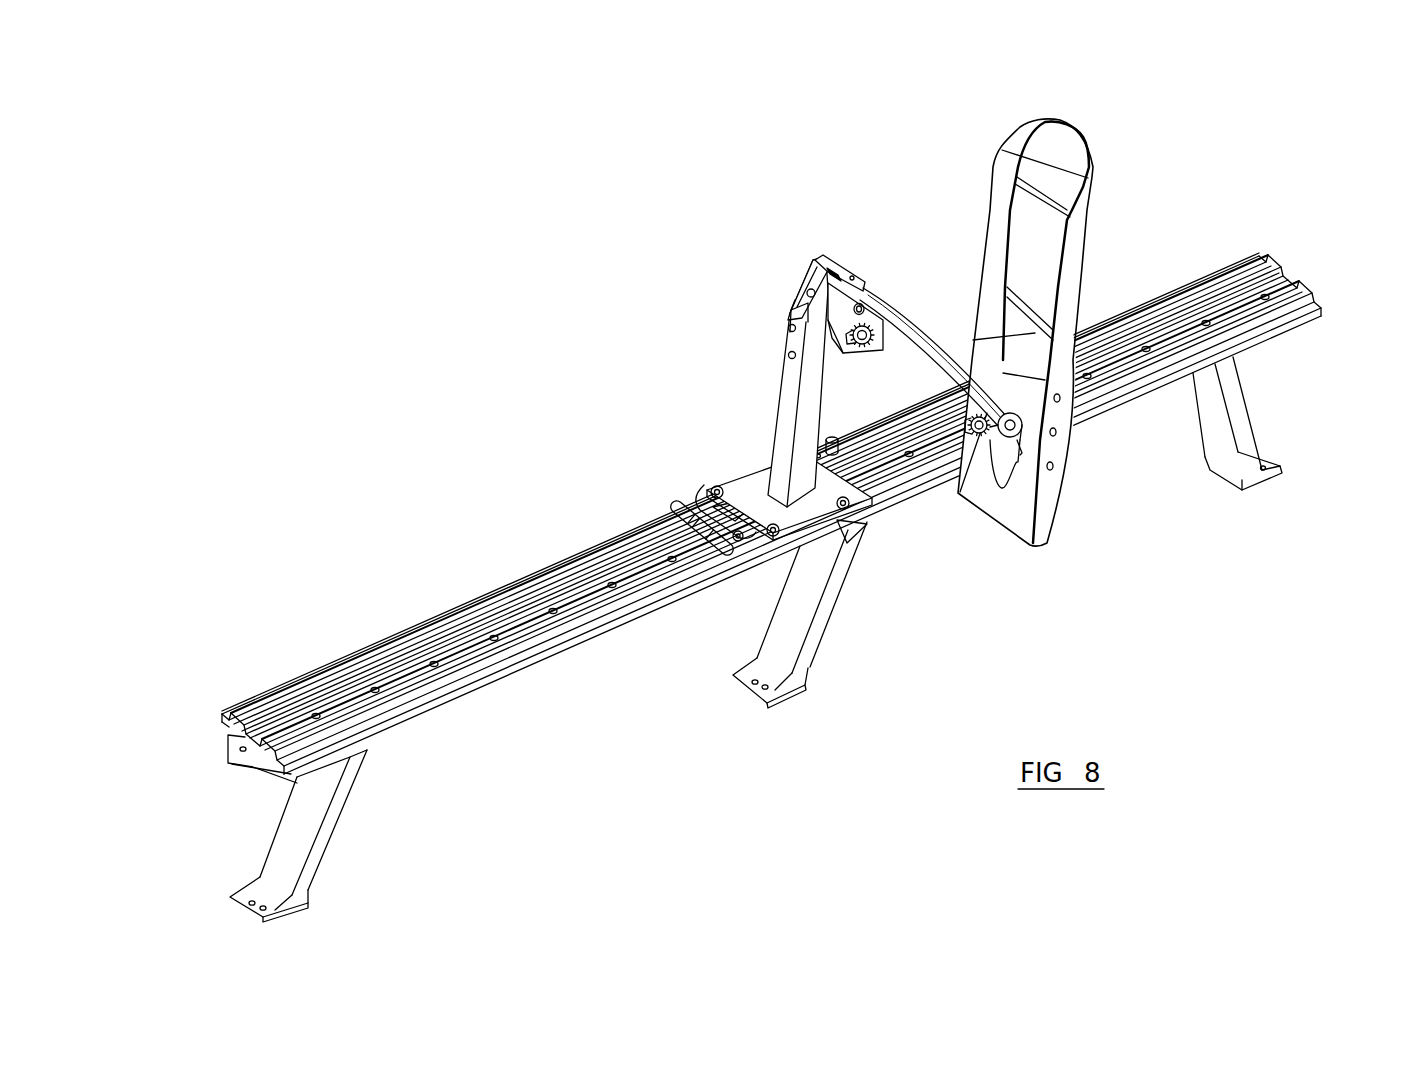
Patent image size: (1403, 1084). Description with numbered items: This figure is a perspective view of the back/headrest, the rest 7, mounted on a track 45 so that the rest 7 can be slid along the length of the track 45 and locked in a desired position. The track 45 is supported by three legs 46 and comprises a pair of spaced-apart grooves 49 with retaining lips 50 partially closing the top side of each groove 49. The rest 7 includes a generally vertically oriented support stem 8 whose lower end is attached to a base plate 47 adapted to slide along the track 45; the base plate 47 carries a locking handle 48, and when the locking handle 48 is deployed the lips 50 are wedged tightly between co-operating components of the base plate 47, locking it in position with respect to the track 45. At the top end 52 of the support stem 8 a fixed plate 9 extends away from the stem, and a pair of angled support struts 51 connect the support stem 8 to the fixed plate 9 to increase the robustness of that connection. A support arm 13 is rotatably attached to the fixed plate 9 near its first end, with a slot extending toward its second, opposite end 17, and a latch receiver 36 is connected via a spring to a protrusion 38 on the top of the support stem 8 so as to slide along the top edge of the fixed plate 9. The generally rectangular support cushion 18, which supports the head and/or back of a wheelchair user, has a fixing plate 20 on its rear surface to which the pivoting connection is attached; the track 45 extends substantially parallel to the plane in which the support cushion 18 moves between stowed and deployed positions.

The rest 7 is at (978, 175).
The support stem 8 is at (785, 415).
The fixed plate 9 is at (833, 338).
The support arm 13 is at (912, 345).
The second end of the support arm 17 is at (1050, 362).
The support cushion 18 is at (1095, 155).
The fixing plate 20 is at (998, 360).
The latch receiver 36 is at (850, 277).
The protrusion 38 is at (827, 268).
The track 45 is at (515, 675).
The legs 46 is at (343, 817).
The base plate 47 is at (740, 492).
The locking handle 48 is at (718, 502).
The grooves 49 is at (282, 766).
The retaining lips 50 is at (255, 718).
The angled support struts 51 is at (803, 292).
The top end of the support stem 52 is at (790, 318).